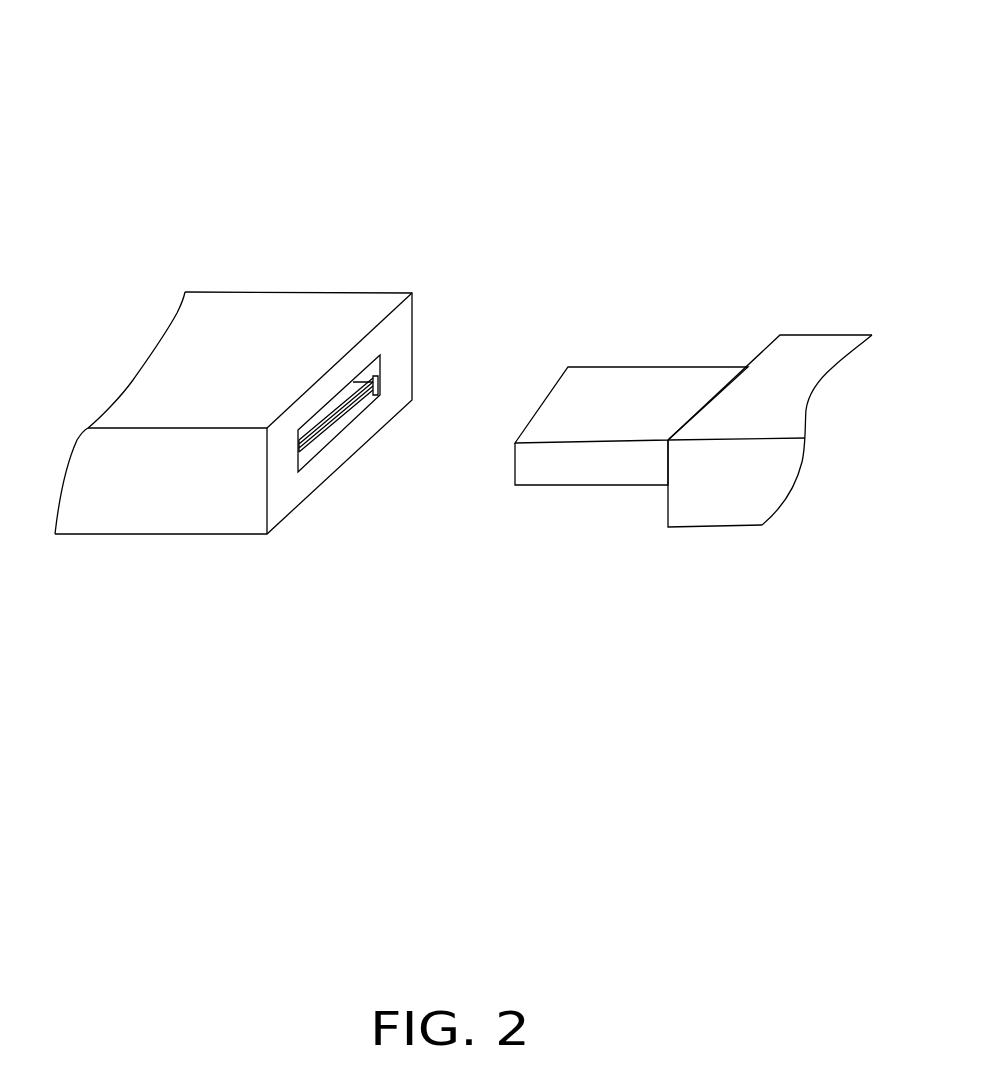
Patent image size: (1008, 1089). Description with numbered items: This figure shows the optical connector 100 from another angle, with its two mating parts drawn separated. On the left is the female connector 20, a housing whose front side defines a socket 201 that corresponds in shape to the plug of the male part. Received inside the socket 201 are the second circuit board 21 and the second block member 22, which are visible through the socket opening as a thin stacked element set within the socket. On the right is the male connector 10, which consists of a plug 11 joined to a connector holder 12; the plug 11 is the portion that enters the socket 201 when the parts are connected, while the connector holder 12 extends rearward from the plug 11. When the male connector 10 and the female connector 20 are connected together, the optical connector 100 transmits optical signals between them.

The optical connector 100 is at (383, 83).
The female connector 20 is at (185, 525).
The socket 201 is at (375, 367).
The second circuit board 21 is at (377, 397).
The second block member 22 is at (332, 420).
The male connector 10 is at (708, 607).
The plug 11 is at (560, 475).
The connector holder 12 is at (767, 488).